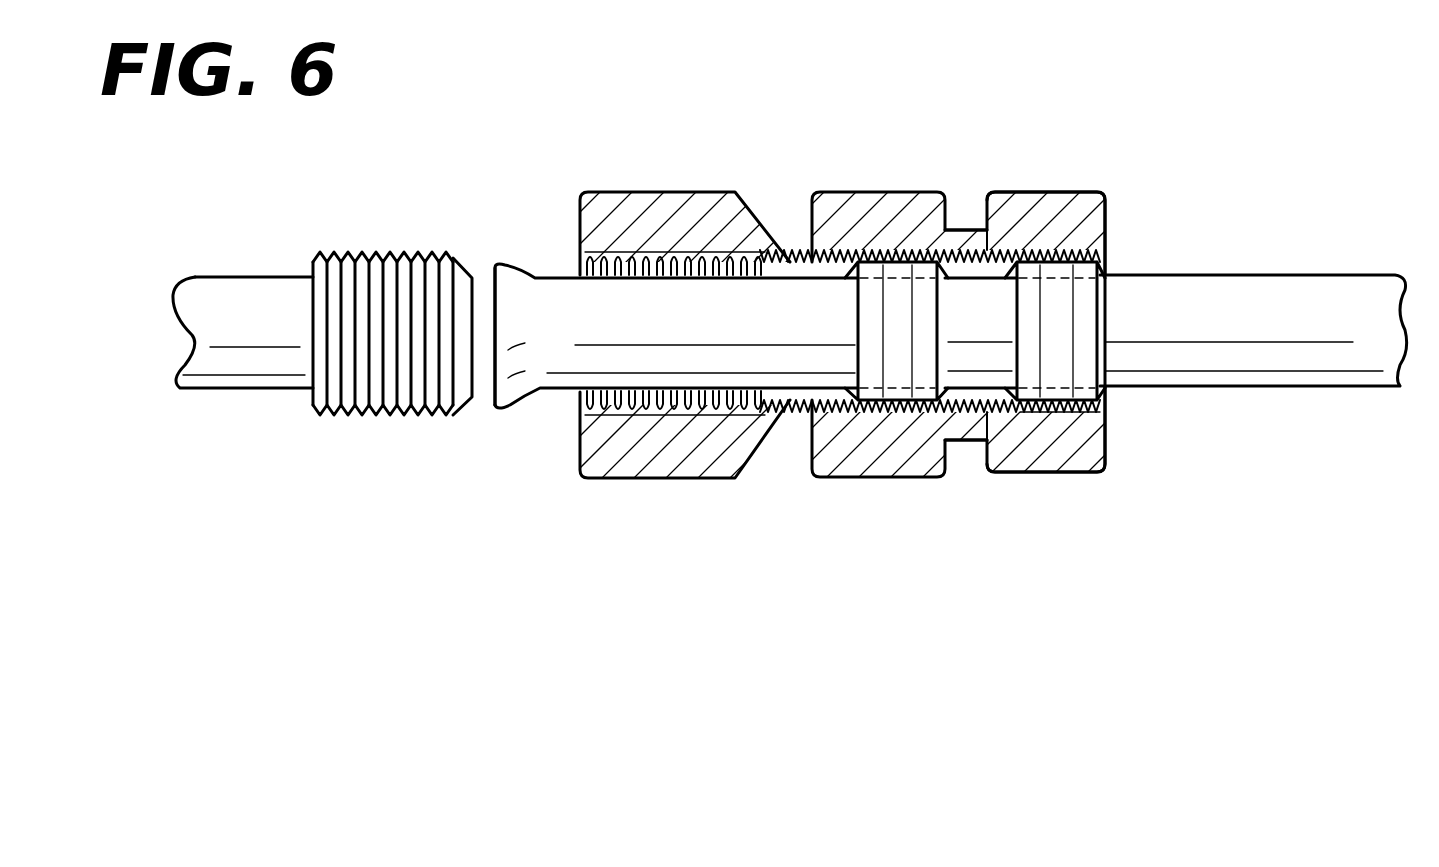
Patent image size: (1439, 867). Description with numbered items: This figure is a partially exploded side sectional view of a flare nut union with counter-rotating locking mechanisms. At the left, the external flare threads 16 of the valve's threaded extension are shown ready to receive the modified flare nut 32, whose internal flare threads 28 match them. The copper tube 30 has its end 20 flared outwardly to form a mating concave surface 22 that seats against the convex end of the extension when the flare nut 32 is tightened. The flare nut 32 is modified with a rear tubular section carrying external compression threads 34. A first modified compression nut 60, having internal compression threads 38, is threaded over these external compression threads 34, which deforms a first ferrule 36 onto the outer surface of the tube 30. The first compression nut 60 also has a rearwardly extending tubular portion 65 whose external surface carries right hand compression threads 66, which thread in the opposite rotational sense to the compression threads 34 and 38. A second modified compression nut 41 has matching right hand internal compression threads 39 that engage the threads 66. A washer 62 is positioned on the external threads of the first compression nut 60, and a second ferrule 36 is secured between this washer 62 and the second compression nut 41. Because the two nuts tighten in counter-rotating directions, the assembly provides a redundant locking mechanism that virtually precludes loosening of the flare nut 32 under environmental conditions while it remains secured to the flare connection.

The external flare threads 16 is at (360, 413).
The end of the copper tube 20 is at (505, 252).
The mating concave surface 22 is at (483, 400).
The internal flare threads 28 is at (640, 405).
The copper tube 30 is at (1345, 270).
The modified flare nut 32 is at (685, 303).
The external compression threads 34 is at (785, 250).
The compression ferrule 36 is at (1115, 245).
The internal compression threads 38 is at (797, 405).
The right hand internal compression threads 39 is at (1035, 440).
The second modified compression nut 41 is at (1122, 245).
The first modified compression nut 60 is at (932, 327).
The washer 62 is at (963, 442).
The rearwardly extending tubular portion 65 is at (995, 252).
The right hand compression threads 66 is at (1010, 445).